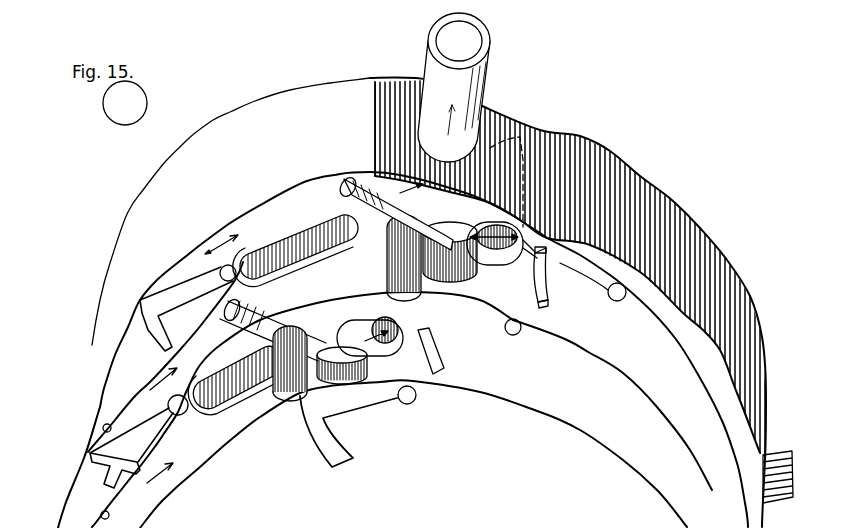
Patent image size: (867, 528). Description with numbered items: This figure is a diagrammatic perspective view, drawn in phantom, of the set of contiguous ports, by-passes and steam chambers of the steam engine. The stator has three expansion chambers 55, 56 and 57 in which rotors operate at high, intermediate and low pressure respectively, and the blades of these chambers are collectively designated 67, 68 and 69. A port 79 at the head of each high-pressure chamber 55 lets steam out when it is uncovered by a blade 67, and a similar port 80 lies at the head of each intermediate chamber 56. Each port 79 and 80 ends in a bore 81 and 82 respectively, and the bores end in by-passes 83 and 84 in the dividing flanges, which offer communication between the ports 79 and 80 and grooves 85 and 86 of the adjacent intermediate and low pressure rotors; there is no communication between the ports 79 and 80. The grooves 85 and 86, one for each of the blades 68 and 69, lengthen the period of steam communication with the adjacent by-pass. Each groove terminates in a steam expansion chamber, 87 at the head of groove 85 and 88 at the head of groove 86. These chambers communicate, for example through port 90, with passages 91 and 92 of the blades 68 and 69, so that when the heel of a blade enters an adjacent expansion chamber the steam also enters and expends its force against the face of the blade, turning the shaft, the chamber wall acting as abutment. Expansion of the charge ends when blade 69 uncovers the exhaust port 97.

The expansion chamber 55 is at (101, 515).
The expansion chamber 56 is at (104, 426).
The expansion chamber 57 is at (145, 209).
The blade 67 is at (327, 457).
The blade 68 is at (442, 350).
The blade 69 is at (549, 298).
The port 79 is at (307, 381).
The port 80 is at (387, 271).
The bore 81 is at (320, 312).
The bore 82 is at (394, 189).
The by-pass 83 is at (347, 380).
The by-pass 84 is at (472, 280).
The groove 85 is at (210, 383).
The groove 86 is at (296, 240).
The steam expansion chamber 87 is at (384, 349).
The steam expansion chamber 88 is at (503, 262).
The port 90 is at (546, 256).
The passage 91 is at (444, 373).
The passage 92 is at (546, 307).
The exhaust port 97 is at (488, 79).